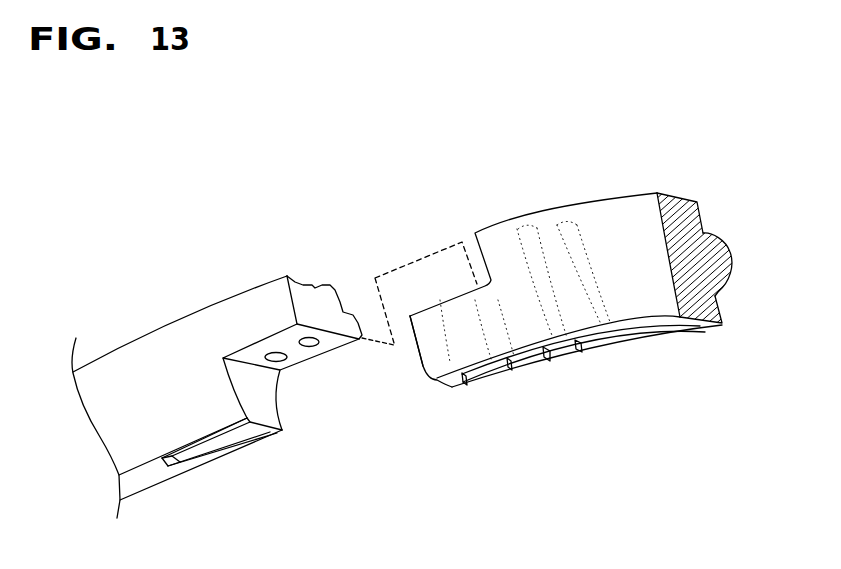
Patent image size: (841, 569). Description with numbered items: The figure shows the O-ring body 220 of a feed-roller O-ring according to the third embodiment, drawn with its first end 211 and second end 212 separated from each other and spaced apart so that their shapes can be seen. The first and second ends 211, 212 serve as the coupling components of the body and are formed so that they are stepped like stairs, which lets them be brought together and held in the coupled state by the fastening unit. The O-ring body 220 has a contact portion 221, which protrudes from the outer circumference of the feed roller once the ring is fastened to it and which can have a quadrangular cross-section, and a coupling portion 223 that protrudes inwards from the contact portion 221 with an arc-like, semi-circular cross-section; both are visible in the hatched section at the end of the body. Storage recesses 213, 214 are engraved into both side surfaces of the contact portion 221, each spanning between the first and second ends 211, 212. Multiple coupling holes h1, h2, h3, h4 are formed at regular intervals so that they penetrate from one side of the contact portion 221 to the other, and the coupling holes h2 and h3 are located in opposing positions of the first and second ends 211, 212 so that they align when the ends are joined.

The first end 211 is at (212, 308).
The second end 212 is at (420, 360).
The storage recess 213 is at (308, 286).
The storage recess 214 is at (545, 366).
The O-ring body 220 is at (575, 188).
The contact portion 221 is at (688, 202).
The coupling portion 223 is at (733, 269).
The coupling hole h1 is at (578, 344).
The coupling hole h2 is at (309, 346).
The coupling hole h3 is at (280, 371).
The coupling hole h4 is at (222, 456).